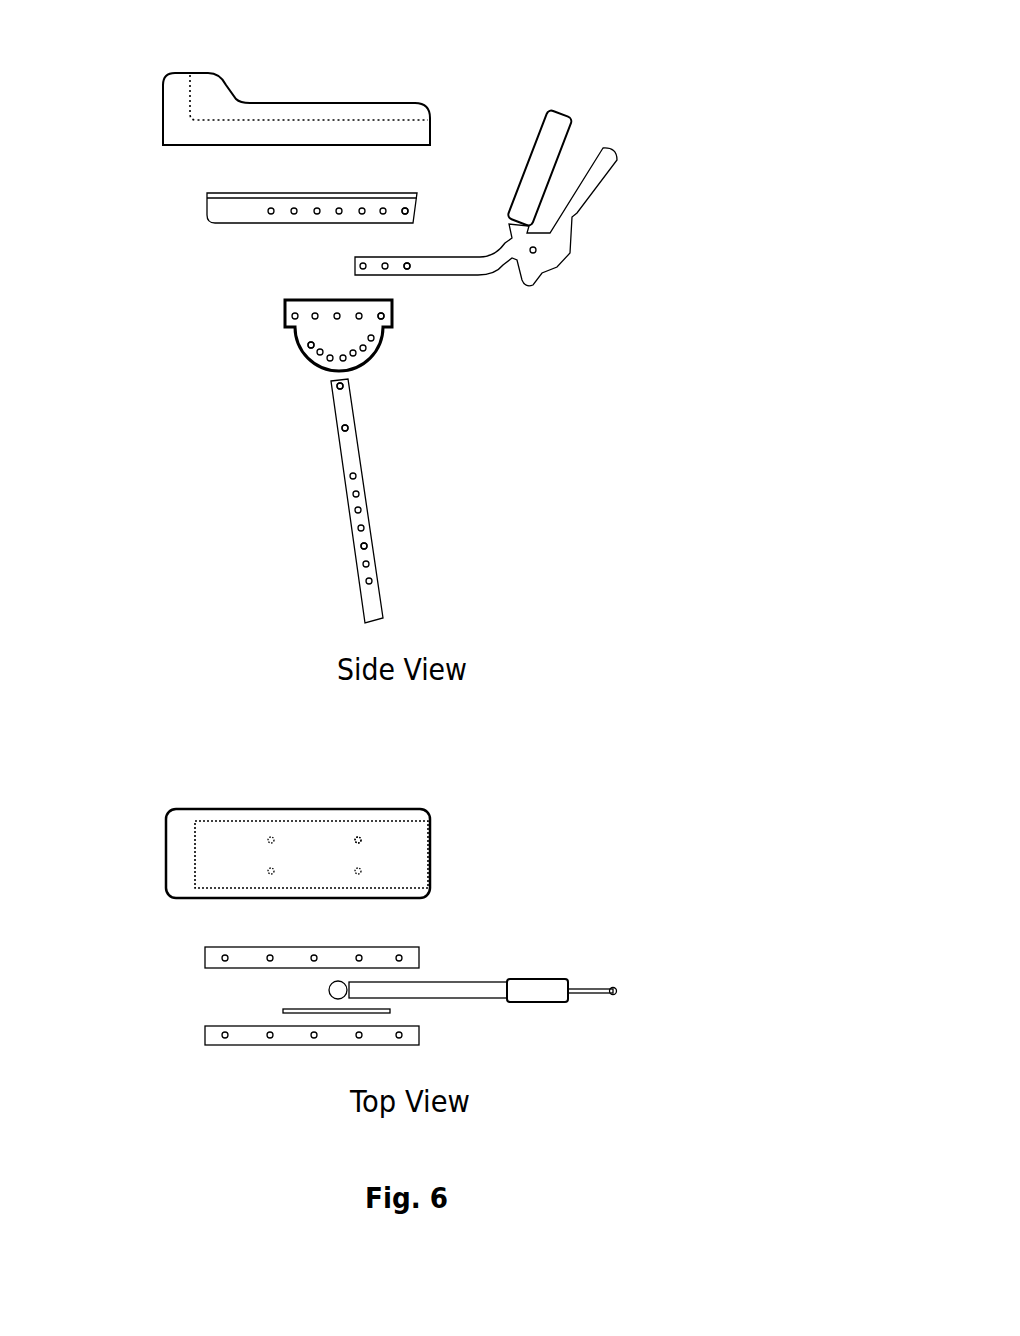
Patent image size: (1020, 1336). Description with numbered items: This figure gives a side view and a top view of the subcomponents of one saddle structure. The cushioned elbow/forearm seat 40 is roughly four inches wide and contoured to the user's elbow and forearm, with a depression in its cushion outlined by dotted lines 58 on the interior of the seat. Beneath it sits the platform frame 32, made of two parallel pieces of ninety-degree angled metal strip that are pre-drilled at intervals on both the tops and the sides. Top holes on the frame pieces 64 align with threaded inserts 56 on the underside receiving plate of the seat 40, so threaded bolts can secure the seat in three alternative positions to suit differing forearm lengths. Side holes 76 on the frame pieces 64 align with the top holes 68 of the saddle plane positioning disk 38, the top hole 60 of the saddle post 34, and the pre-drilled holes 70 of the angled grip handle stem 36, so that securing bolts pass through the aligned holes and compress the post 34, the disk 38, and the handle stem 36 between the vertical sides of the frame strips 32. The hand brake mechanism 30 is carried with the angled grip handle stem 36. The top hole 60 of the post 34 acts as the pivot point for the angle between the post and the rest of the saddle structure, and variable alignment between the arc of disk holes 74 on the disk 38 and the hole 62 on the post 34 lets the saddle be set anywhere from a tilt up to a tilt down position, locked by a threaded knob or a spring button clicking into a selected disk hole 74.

The hand brake mechanism 30 is at (577, 203).
The platform frame 32 is at (235, 212).
The saddle post 34 is at (347, 451).
The angled grip handle stem 36 is at (445, 266).
The saddle plane positioning disk 38 is at (340, 338).
The cushioned elbow/forearm seat 40 is at (173, 127).
The threaded inserts 56 is at (358, 840).
The dotted lines 58 is at (225, 120).
The top hole 60 is at (340, 386).
The post hole 62 is at (345, 428).
The frame pieces 64 is at (399, 958).
The top holes 68 is at (381, 316).
The pre-drilled holes 70 is at (407, 266).
The disk holes 74 is at (313, 358).
The side holes 76 is at (407, 210).